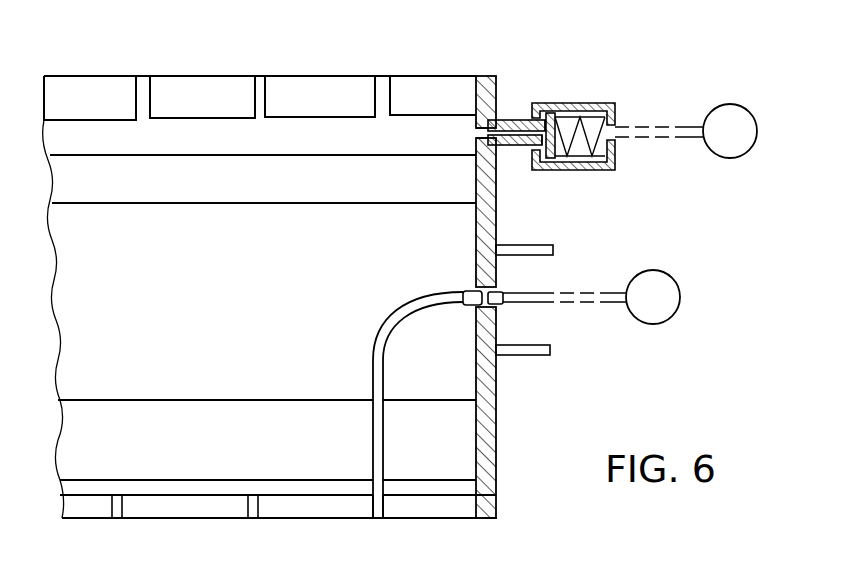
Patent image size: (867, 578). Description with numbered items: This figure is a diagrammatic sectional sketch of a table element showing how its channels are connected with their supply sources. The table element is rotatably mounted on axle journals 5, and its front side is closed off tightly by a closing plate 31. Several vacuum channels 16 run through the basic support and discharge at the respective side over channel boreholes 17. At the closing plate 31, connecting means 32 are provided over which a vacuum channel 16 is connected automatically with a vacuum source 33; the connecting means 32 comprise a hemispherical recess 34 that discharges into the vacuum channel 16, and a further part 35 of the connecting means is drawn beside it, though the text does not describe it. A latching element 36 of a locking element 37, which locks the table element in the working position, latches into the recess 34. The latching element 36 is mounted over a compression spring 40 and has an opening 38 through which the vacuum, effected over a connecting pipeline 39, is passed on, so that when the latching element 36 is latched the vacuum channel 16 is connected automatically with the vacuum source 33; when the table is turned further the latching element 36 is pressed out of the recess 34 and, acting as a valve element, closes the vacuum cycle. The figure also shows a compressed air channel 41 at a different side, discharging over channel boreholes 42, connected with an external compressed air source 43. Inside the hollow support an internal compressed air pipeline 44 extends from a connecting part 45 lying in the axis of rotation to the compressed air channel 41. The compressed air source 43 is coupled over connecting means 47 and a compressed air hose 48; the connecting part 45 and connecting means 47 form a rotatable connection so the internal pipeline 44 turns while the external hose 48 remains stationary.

The axle journal 5 is at (555, 250).
The vacuum channel 16 is at (305, 128).
The channel borehole 17 is at (372, 92).
The closing plate 31 is at (496, 210).
The connecting means 32 is at (498, 116).
The vacuum source 33 is at (749, 112).
The recess 34 is at (517, 113).
The upper rod half 35 is at (486, 130).
The latching element 36 is at (505, 150).
The locking element 37 is at (600, 100).
The opening 38 is at (566, 103).
The connecting pipeline 39 is at (668, 125).
The compression spring 40 is at (615, 156).
The compressed air channel 41 is at (436, 490).
The channel borehole 42 is at (376, 520).
The compressed air source 43 is at (672, 310).
The compressed air pipeline 44 is at (373, 367).
The connecting part 45 is at (477, 290).
The connecting means 47 is at (503, 305).
The compressed air hose 48 is at (592, 306).